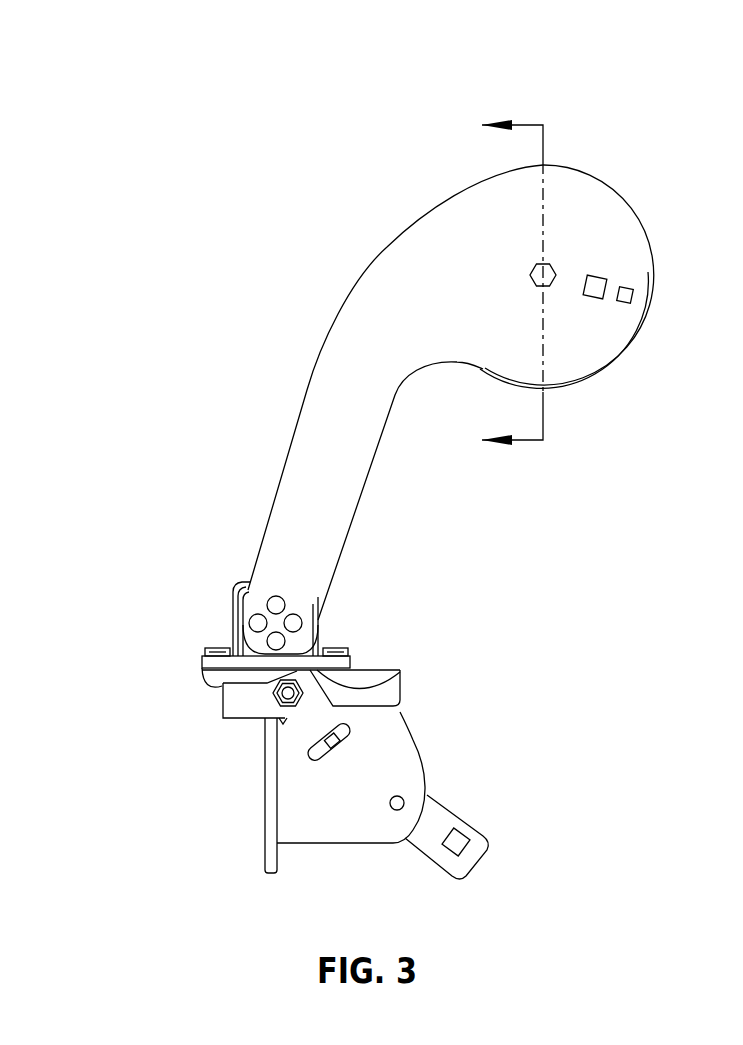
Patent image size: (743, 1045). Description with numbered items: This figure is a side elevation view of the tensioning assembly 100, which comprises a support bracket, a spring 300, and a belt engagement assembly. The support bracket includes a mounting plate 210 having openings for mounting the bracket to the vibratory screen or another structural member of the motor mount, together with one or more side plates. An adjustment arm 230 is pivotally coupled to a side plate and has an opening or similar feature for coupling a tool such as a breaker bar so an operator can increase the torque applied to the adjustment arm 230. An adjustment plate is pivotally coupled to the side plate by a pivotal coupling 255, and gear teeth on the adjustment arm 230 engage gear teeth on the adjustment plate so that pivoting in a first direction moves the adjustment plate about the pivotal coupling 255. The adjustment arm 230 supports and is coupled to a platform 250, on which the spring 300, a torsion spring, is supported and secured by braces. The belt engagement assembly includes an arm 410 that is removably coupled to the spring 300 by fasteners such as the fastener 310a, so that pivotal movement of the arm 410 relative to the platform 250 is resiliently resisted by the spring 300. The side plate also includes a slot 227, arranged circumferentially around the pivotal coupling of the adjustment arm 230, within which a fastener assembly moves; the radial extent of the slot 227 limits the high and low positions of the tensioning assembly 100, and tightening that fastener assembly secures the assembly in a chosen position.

The tensioning assembly 100 is at (193, 174).
The arm 410 is at (298, 517).
The fastener 310a is at (300, 612).
The spring 300 is at (400, 672).
The platform 250 is at (206, 697).
The pivotal coupling 255 is at (283, 722).
The mounting plate 210 is at (262, 778).
The slot 227 is at (349, 730).
The adjustment arm 230 is at (470, 815).